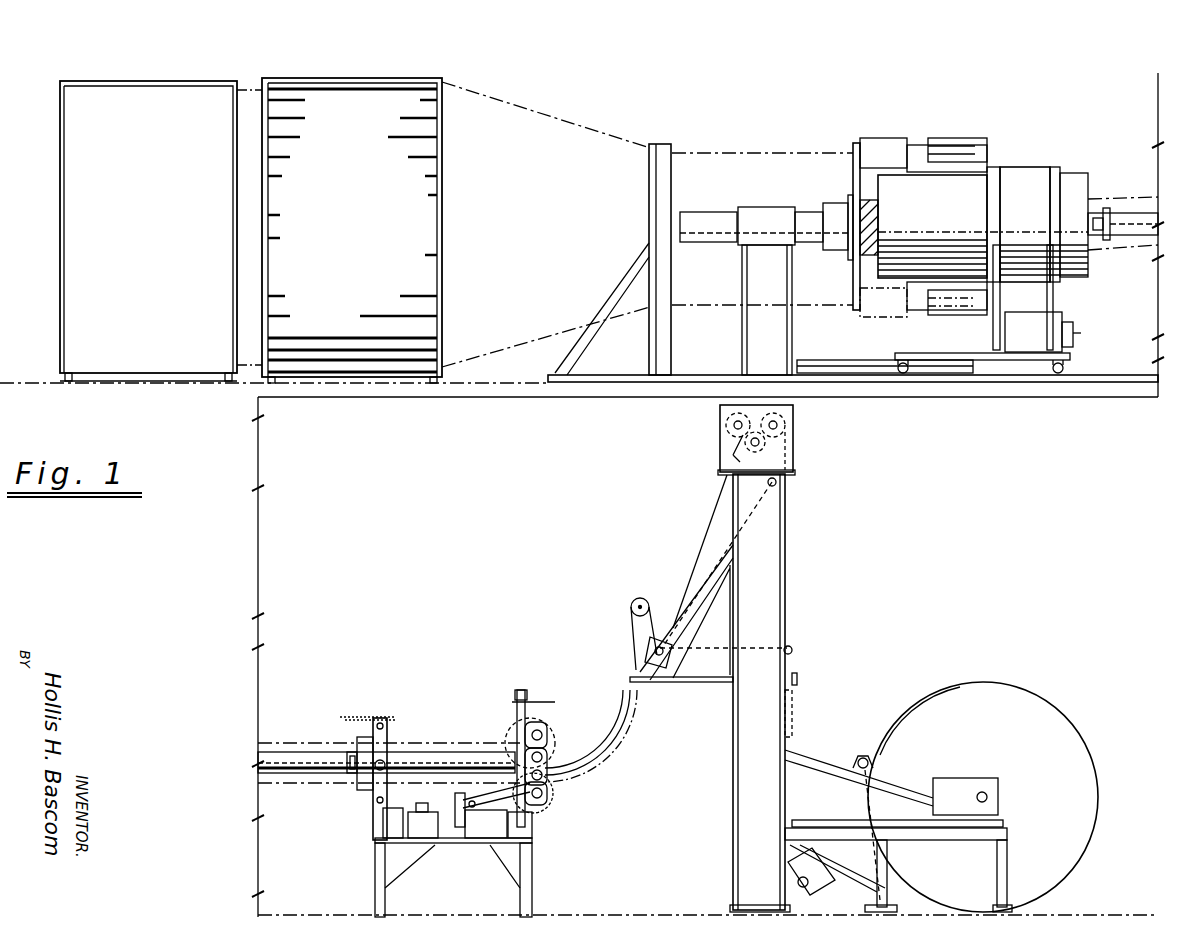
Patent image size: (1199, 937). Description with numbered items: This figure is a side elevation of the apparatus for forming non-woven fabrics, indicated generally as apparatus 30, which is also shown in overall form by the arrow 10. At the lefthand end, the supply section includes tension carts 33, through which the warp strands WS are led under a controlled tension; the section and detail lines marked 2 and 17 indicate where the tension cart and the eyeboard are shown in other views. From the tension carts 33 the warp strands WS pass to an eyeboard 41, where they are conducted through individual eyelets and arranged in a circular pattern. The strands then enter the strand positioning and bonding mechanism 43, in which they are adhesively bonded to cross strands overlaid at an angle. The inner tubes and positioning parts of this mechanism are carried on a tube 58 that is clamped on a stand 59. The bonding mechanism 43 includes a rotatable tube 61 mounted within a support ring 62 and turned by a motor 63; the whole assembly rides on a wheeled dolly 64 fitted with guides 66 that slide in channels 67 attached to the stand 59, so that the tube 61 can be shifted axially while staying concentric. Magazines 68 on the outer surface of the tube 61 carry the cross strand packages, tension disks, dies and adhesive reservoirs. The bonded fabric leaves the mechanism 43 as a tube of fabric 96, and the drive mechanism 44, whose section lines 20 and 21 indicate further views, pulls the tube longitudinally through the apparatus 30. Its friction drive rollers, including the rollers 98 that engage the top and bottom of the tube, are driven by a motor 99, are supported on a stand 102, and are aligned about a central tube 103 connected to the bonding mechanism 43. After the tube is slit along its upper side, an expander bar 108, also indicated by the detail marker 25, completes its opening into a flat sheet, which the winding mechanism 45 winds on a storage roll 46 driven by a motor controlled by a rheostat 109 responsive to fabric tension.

The apparatus 10 is at (471, 73).
The tension carts 33 is at (150, 80).
The eyeboard 41 is at (662, 144).
The strand positioning and bonding mechanism 43 is at (708, 450).
The tube 58 is at (722, 244).
The stand 59 is at (741, 325).
The tube 61 is at (946, 217).
The support ring 62 is at (1036, 217).
The motor 63 is at (1037, 343).
The wheeled dolly 64 is at (957, 355).
The guides 66 is at (862, 365).
The channels 67 is at (813, 365).
The magazines 68 is at (913, 140).
The tube of fabric 96 is at (1136, 197).
The central tube 103 is at (1133, 237).
The apparatus for forming non-woven fabrics 30 is at (956, 488).
The guide roller 25 is at (643, 555).
The rheostat 109 is at (792, 650).
The drive mechanism 44 is at (487, 758).
The winding mechanism 45 is at (858, 652).
The storage roll 46 is at (985, 688).
The motor 99 is at (380, 714).
The rollers 98 is at (537, 722).
The expander bar 108 is at (628, 690).
The stand 102 is at (375, 868).
The section line 2- 2 is at (458, 389).
The section line 17- 17 is at (588, 390).
The section line 20- 20 is at (571, 853).
The section line 21- 21 is at (582, 665).
The warp strands WS is at (509, 96).